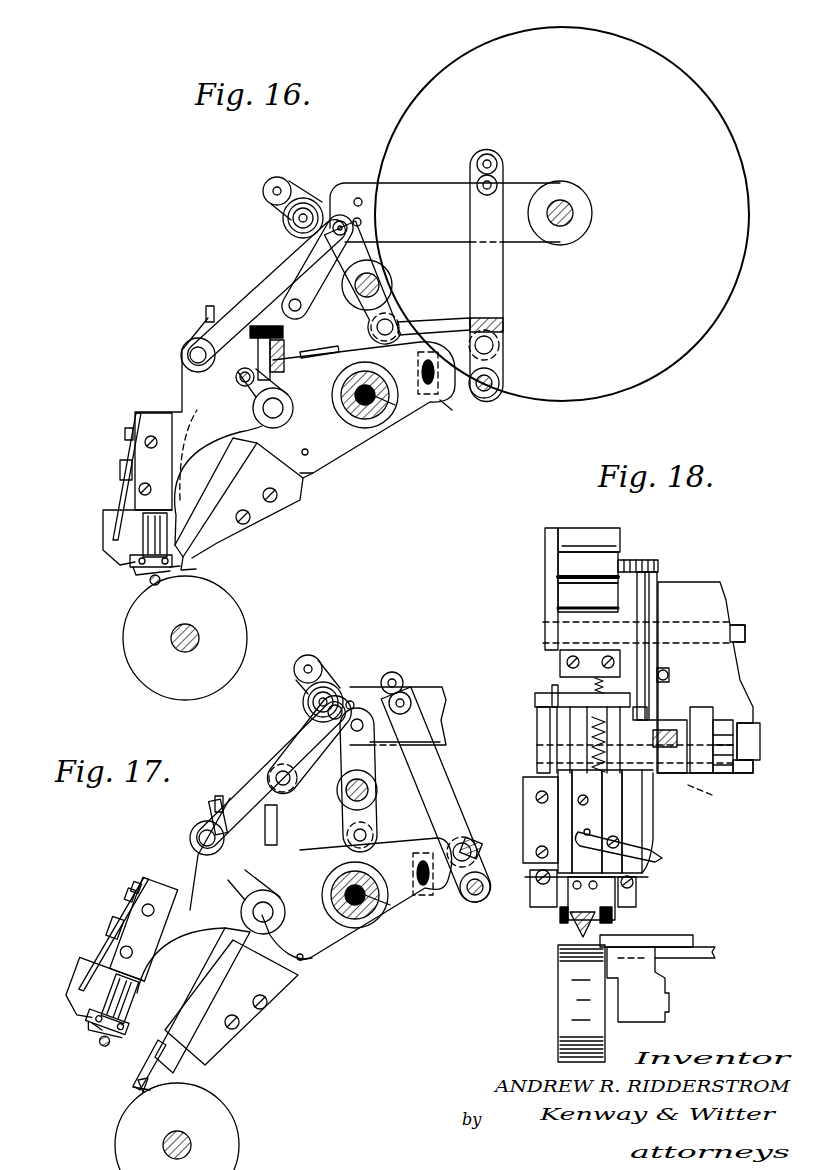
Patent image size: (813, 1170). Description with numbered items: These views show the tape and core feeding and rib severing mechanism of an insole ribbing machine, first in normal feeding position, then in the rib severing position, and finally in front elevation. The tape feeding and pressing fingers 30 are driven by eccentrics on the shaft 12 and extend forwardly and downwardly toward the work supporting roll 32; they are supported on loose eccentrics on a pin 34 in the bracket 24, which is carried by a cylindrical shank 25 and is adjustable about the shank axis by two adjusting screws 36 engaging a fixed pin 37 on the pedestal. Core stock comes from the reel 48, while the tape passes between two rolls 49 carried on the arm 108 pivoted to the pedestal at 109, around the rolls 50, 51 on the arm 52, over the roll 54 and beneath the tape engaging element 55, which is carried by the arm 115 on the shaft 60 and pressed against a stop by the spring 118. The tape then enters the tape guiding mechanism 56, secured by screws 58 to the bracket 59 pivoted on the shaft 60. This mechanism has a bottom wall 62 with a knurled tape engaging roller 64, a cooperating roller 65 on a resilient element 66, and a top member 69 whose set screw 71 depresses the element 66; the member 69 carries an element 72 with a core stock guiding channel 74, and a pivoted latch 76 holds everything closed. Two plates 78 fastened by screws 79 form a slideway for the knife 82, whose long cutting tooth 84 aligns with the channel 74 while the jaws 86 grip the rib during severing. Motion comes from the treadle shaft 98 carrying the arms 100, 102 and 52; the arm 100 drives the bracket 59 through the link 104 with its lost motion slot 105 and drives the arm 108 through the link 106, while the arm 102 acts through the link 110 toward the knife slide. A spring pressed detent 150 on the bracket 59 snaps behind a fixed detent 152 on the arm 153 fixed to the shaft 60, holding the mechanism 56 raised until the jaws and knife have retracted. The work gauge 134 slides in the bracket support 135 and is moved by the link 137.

In FIG. 16, the shaft 12 is at (377, 418).
In FIG. 17, the shaft 12 is at (370, 918).
In FIG. 18, the shaft 12 is at (760, 748).
In FIG. 16, the bracket 24 is at (348, 445).
In FIG. 17, the bracket 24 is at (345, 930).
In FIG. 18, the bracket 24 is at (533, 838).
In FIG. 16, the cylindrical shank 25 is at (388, 407).
In FIG. 17, the cylindrical shank 25 is at (385, 905).
In FIG. 18, the cylindrical shank 25 is at (750, 768).
In FIG. 16, the tape feeding and pressing fingers 30 is at (225, 558).
In FIG. 17, the tape feeding and pressing fingers 30 is at (218, 1060).
In FIG. 16, the work supporting roll 32 is at (245, 625).
In FIG. 17, the work supporting roll 32 is at (240, 1133).
In FIG. 18, the work supporting roll 32 is at (558, 1010).
In FIG. 16, the pin 34 is at (313, 478).
In FIG. 17, the pin 34 is at (312, 963).
In FIG. 16, the adjusting screws 36 is at (452, 410).
In FIG. 17, the adjusting screws 36 is at (440, 895).
In FIG. 16, the fixed pin 37 is at (430, 395).
In FIG. 16, the reel 48 is at (682, 78).
In FIG. 16, the rolls 49 is at (497, 185).
In FIG. 17, the rolls 49 is at (412, 700).
In FIG. 16, the roll 50 is at (279, 177).
In FIG. 17, the roll 50 is at (312, 656).
In FIG. 18, the roll 50 is at (572, 528).
In FIG. 16, the roll 51 is at (308, 198).
In FIG. 17, the roll 51 is at (330, 683).
In FIG. 18, the roll 51 is at (598, 552).
In FIG. 16, the arm 52 is at (283, 206).
In FIG. 17, the arm 52 is at (303, 687).
In FIG. 18, the arm 52 is at (545, 578).
In FIG. 18, the roll 54 is at (535, 698).
In FIG. 16, the tape engaging element 55 is at (206, 313).
In FIG. 17, the tape engaging element 55 is at (214, 805).
In FIG. 18, the tape engaging element 55 is at (560, 670).
In FIG. 16, the tape guiding mechanism 56 is at (104, 422).
In FIG. 18, the tape guiding mechanism 56 is at (634, 810).
In FIG. 16, the screws 58 is at (140, 484).
In FIG. 17, the screws 58 is at (122, 945).
In FIG. 16, the bracket 59 is at (182, 360).
In FIG. 17, the bracket 59 is at (198, 858).
In FIG. 18, the bracket 59 is at (655, 822).
In FIG. 16, the shaft 60 is at (293, 443).
In FIG. 17, the shaft 60 is at (303, 962).
In FIG. 18, the shaft 60 is at (712, 797).
In FIG. 16, the bottom wall 62 is at (145, 560).
In FIG. 17, the bottom wall 62 is at (125, 990).
In FIG. 16, the knurled tape engaging roller 64 is at (152, 583).
In FIG. 17, the knurled tape engaging roller 64 is at (108, 1040).
In FIG. 16, the cooperating roller 65 is at (150, 570).
In FIG. 17, the cooperating roller 65 is at (95, 1025).
In FIG. 18, the cooperating roller 65 is at (612, 922).
In FIG. 16, the resilient element 66 is at (140, 518).
In FIG. 17, the resilient element 66 is at (120, 999).
In FIG. 18, the resilient element 66 is at (560, 912).
In FIG. 16, the top member 69 is at (136, 412).
In FIG. 17, the top member 69 is at (140, 875).
In FIG. 18, the top member 69 is at (575, 818).
In FIG. 17, the set screw 71 is at (128, 880).
In FIG. 18, the set screw 71 is at (578, 800).
In FIG. 16, the element 72 is at (130, 545).
In FIG. 17, the element 72 is at (75, 990).
In FIG. 18, the element 72 is at (640, 905).
In FIG. 18, the core stock guiding channel 74 is at (578, 925).
In FIG. 16, the pivoted latch 76 is at (119, 478).
In FIG. 17, the pivoted latch 76 is at (95, 938).
In FIG. 18, the pivoted latch 76 is at (662, 860).
In FIG. 16, the plates 78 is at (208, 486).
In FIG. 17, the plates 78 is at (193, 1000).
In FIG. 18, the plates 78 is at (530, 888).
In FIG. 18, the screws 79 is at (537, 793).
In FIG. 17, the knife 82 is at (137, 1081).
In FIG. 17, the cutting tooth 84 is at (132, 1090).
In FIG. 17, the jaws 86 is at (145, 1075).
In FIG. 16, the shaft 98 is at (392, 285).
In FIG. 17, the shaft 98 is at (370, 790).
In FIG. 18, the shaft 98 is at (742, 628).
In FIG. 16, the arm 100 is at (372, 259).
In FIG. 17, the arm 100 is at (396, 716).
In FIG. 18, the arm 100 is at (647, 598).
In FIG. 16, the arm 102 is at (376, 327).
In FIG. 17, the arm 102 is at (280, 770).
In FIG. 16, the link 104 is at (273, 270).
In FIG. 17, the link 104 is at (262, 790).
In FIG. 18, the link 104 is at (645, 600).
In FIG. 16, the lost motion slot 105 is at (326, 233).
In FIG. 17, the lost motion slot 105 is at (328, 718).
In FIG. 16, the link 106 is at (433, 324).
In FIG. 16, the arm 108 is at (497, 308).
In FIG. 17, the arm 108 is at (437, 790).
In FIG. 16, the pivot 109 is at (499, 382).
In FIG. 17, the pivot 109 is at (483, 897).
In FIG. 16, the link 110 is at (330, 351).
In FIG. 17, the link 110 is at (437, 744).
In FIG. 16, the arm 115 is at (285, 368).
In FIG. 17, the arm 115 is at (228, 800).
In FIG. 16, the spring 118 is at (268, 288).
In FIG. 17, the spring 118 is at (290, 880).
In FIG. 18, the work gauge 134 is at (696, 940).
In FIG. 18, the bracket support 135 is at (665, 1018).
In FIG. 18, the link 137 is at (715, 953).
In FIG. 16, the spring pressed detent 150 is at (233, 393).
In FIG. 18, the spring pressed detent 150 is at (700, 735).
In FIG. 16, the fixed detent 152 is at (236, 378).
In FIG. 18, the fixed detent 152 is at (672, 722).
In FIG. 16, the arm 153 is at (294, 409).
In FIG. 17, the arm 153 is at (241, 905).
In FIG. 18, the arm 153 is at (728, 740).